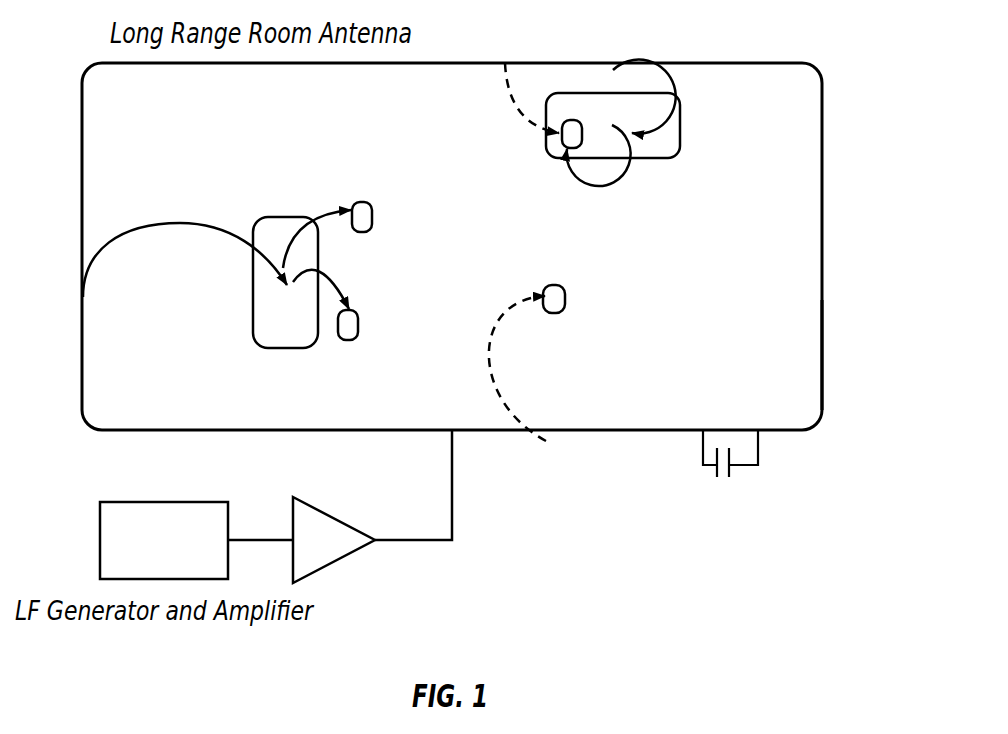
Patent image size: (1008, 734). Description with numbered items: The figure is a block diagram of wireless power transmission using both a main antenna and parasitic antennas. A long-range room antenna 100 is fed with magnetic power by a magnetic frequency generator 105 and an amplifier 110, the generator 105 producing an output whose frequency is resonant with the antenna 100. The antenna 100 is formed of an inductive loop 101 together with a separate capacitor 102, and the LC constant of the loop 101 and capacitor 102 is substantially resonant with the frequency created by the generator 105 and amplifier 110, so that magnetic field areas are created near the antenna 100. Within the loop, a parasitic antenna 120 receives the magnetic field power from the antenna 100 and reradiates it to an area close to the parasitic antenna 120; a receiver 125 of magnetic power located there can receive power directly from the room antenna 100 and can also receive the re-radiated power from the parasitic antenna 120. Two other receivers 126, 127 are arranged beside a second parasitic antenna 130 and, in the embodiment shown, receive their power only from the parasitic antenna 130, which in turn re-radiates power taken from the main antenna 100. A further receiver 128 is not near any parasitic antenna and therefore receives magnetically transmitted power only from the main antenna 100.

The long-range room antenna 100 is at (822, 247).
The inductive loop 101 is at (822, 367).
The capacitor 102 is at (723, 477).
The magnetic frequency generator 105 is at (130, 500).
The amplifier 110 is at (315, 500).
The parasitic antenna 120 is at (648, 162).
The receiver 125 is at (564, 128).
The receiver 126 is at (361, 201).
The receiver 127 is at (362, 320).
The receiver 128 is at (553, 283).
The parasitic antenna 130 is at (253, 322).